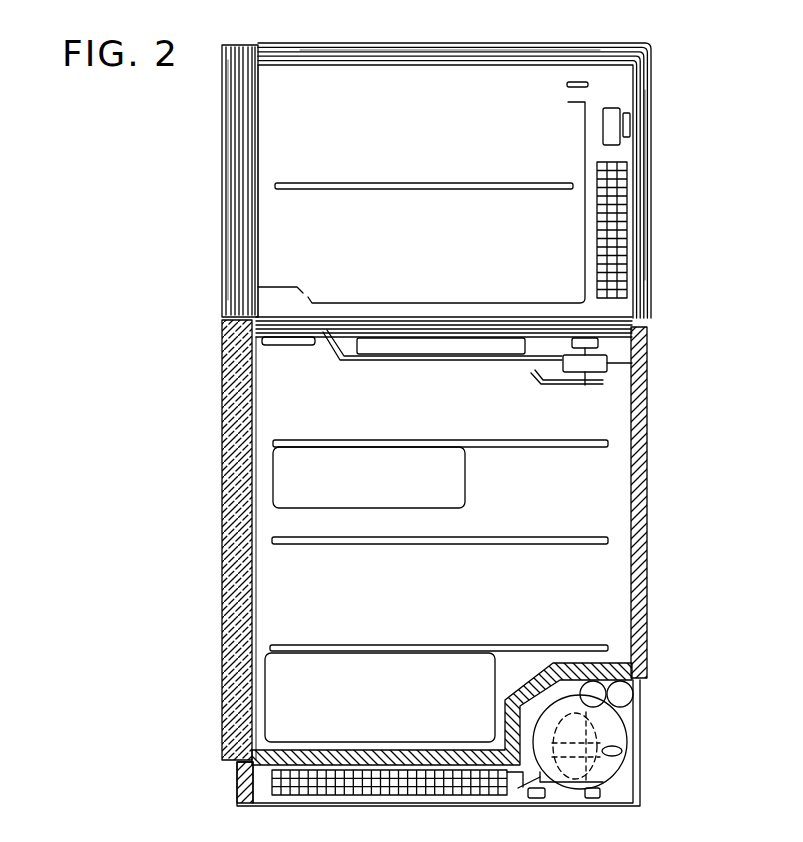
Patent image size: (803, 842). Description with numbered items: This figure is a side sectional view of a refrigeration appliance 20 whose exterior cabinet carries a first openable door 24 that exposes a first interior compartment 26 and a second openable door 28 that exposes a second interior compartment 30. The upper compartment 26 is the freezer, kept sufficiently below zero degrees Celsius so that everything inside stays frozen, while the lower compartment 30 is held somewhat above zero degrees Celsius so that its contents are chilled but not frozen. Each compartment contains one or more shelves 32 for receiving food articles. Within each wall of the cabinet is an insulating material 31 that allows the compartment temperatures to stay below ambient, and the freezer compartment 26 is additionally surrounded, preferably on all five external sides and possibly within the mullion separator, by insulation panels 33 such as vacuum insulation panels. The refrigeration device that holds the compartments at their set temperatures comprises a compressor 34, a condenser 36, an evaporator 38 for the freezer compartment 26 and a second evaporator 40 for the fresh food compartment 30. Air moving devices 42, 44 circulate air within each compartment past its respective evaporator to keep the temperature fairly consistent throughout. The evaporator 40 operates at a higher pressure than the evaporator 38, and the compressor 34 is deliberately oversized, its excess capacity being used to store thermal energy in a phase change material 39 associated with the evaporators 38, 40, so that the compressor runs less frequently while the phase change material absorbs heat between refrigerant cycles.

The refrigeration appliance 20 is at (655, 82).
The first openable door 24 is at (221, 250).
The first interior compartment 26 is at (512, 90).
The second openable door 28 is at (223, 495).
The second interior compartment 30 is at (280, 393).
The insulating material 31 is at (228, 573).
The shelves 32 is at (335, 183).
The insulation panels 33 is at (443, 47).
The compressor 34 is at (588, 733).
The condenser 36 is at (272, 783).
The evaporator 38 is at (600, 243).
The phase change material 39 is at (598, 212).
The second evaporator 40 is at (465, 346).
The air moving device 42 is at (603, 126).
The air moving device 44 is at (587, 373).